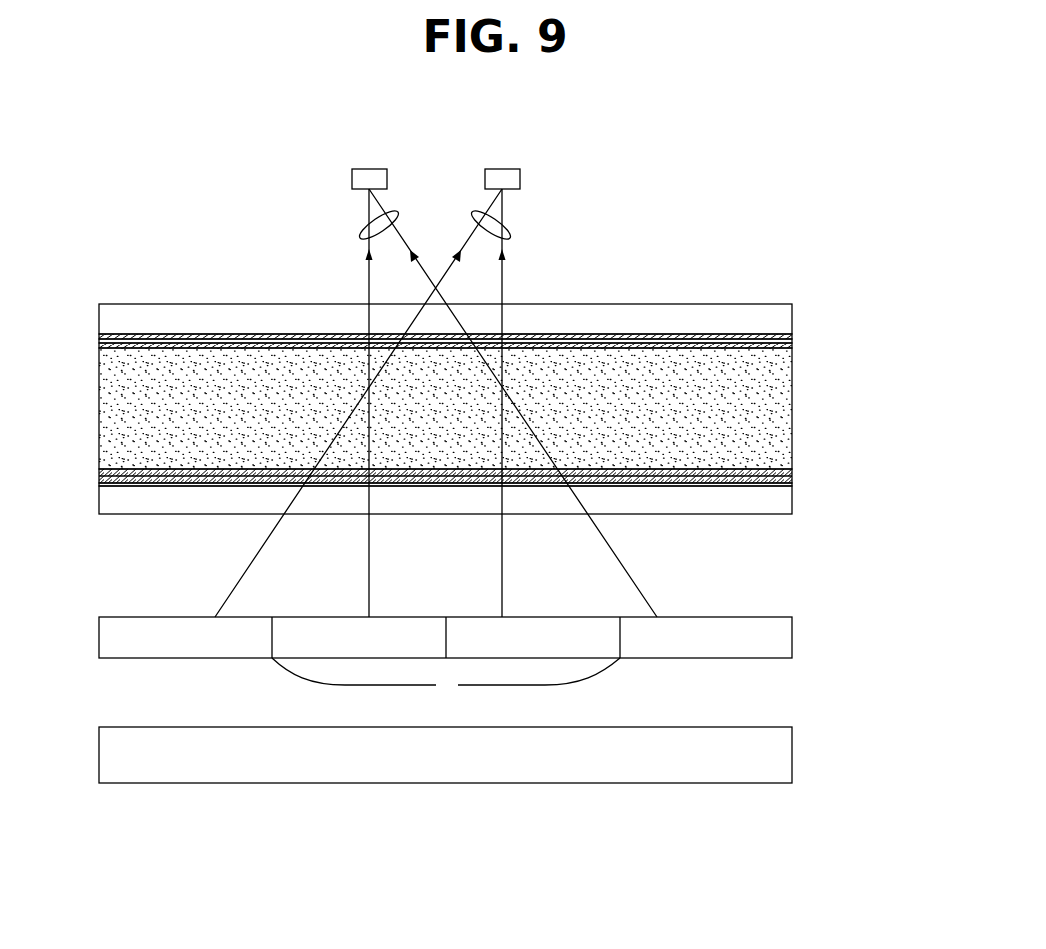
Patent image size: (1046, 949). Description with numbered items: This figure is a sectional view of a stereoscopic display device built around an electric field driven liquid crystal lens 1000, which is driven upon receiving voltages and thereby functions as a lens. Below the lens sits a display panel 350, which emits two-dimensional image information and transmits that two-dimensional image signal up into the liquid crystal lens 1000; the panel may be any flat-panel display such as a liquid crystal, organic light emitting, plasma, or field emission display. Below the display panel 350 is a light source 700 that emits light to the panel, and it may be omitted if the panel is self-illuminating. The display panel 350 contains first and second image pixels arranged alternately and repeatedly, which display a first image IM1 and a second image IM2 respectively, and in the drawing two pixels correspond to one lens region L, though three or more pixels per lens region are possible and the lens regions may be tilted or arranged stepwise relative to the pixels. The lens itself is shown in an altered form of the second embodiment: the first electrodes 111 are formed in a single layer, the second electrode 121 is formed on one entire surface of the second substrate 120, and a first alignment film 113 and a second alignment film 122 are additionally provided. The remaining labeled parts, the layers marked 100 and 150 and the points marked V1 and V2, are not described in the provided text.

The first substrate 100 is at (483, 504).
The first electrodes 111 is at (792, 485).
The first alignment film 113 is at (792, 477).
The liquid crystal layer 150 is at (792, 410).
The second alignment film 122 is at (792, 345).
The second electrode 121 is at (792, 336).
The second substrate 120 is at (792, 312).
The electric field driven liquid crystal lens 1000 is at (519, 413).
The display panel 350 is at (792, 638).
The light source 700 is at (792, 755).
The first viewpoint V1 is at (369, 165).
The second viewpoint V2 is at (502, 165).
The first image IM1 is at (361, 224).
The second image IM2 is at (510, 224).
The lens region L is at (446, 676).